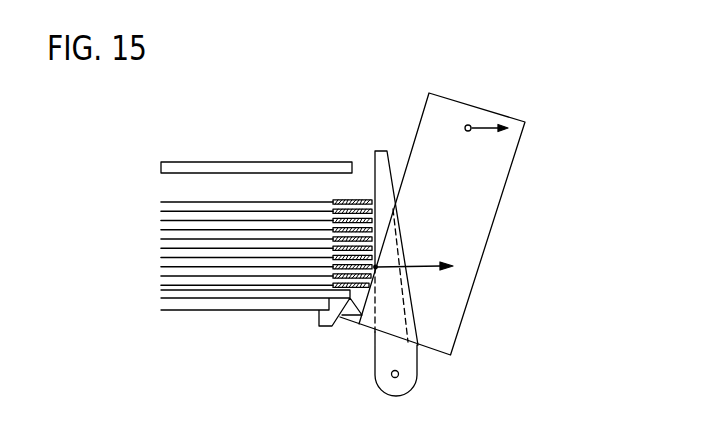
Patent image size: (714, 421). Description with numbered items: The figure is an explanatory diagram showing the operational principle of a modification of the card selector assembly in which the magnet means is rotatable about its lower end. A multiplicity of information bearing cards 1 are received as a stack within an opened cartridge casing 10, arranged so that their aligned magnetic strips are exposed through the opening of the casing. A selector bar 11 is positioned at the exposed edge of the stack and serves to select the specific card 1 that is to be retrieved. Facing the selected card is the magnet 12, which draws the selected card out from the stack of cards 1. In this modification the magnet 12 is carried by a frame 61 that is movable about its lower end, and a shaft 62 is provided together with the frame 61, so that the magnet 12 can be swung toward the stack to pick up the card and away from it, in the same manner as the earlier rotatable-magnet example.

The card 1 is at (247, 270).
The cartridge casing 10 is at (253, 162).
The selector bar 11 is at (383, 155).
The magnet means 12 is at (480, 197).
The frame 61 is at (465, 253).
The shaft 62 is at (468, 125).